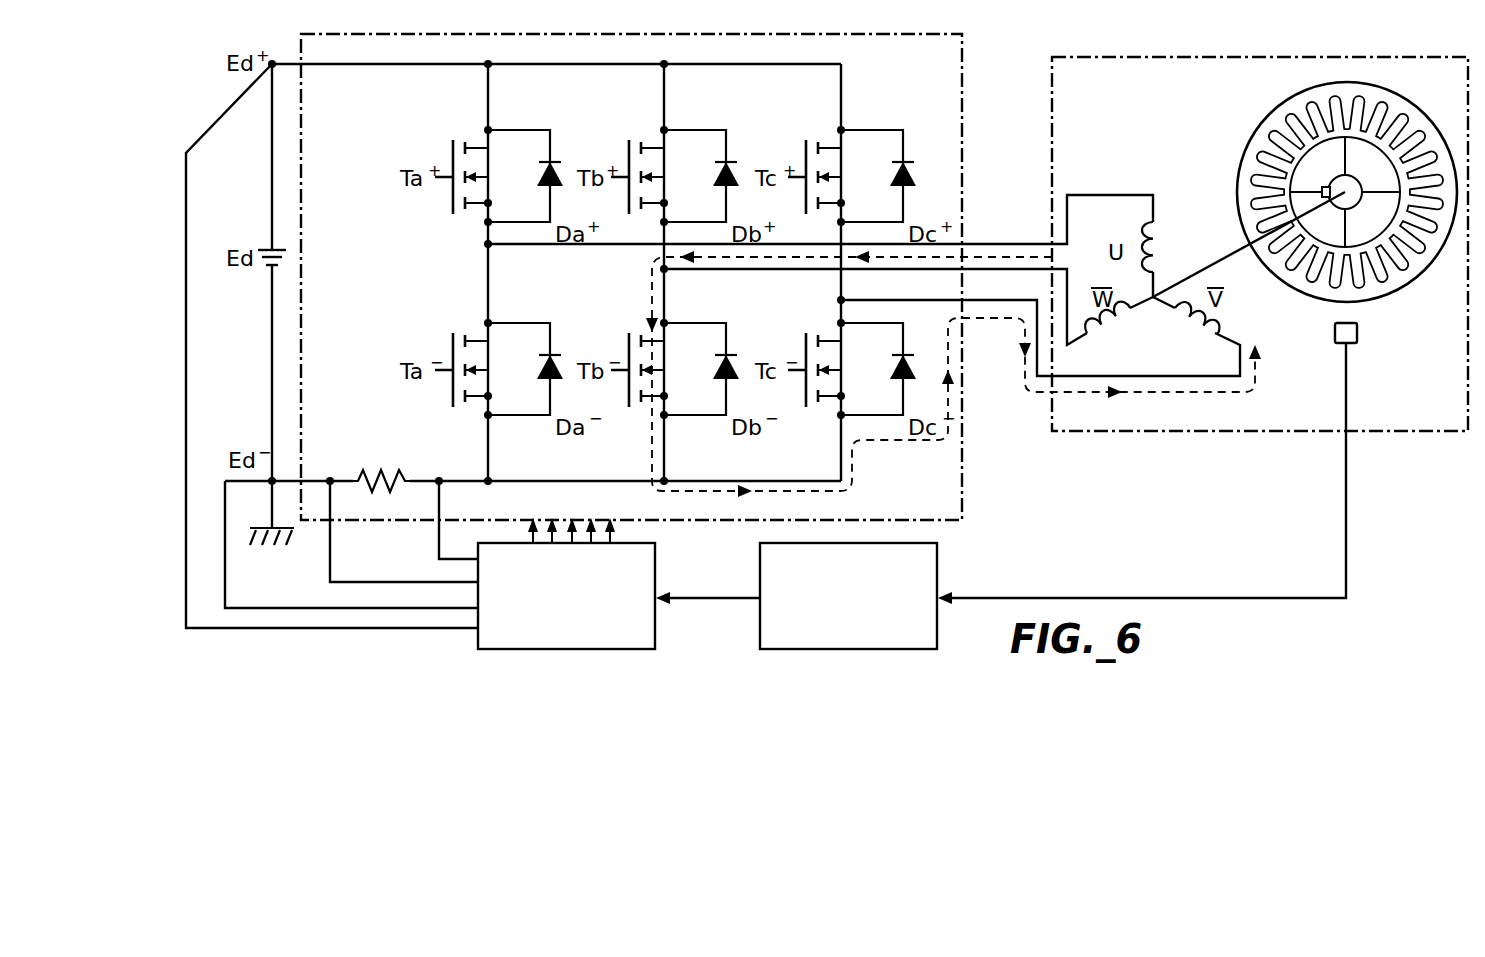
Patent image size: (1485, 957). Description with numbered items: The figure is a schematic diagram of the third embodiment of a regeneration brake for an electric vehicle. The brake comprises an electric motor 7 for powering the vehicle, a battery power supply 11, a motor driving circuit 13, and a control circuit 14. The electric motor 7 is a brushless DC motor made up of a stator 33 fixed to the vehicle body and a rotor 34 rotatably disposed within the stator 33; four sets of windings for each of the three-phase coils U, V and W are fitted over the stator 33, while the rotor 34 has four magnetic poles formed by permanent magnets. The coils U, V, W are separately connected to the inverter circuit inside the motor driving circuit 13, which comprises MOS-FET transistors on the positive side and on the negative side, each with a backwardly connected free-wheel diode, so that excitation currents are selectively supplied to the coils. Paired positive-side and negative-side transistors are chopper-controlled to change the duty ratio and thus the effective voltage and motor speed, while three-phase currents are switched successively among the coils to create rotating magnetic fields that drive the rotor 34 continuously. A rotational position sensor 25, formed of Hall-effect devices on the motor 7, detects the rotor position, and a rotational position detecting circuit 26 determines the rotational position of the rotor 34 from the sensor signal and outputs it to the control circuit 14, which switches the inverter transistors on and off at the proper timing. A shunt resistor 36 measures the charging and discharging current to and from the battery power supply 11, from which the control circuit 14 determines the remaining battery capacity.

The electric motor 7 is at (1190, 57).
The battery power supply 11 is at (266, 248).
The motor driving circuit 13 is at (836, 37).
The control circuit 14 is at (657, 572).
The rotational position sensor 25 is at (1357, 333).
The rotational position detecting circuit 26 is at (939, 572).
The stator 33 is at (1347, 194).
The rotor 34 is at (1364, 280).
The shunt resistor 36 is at (396, 468).